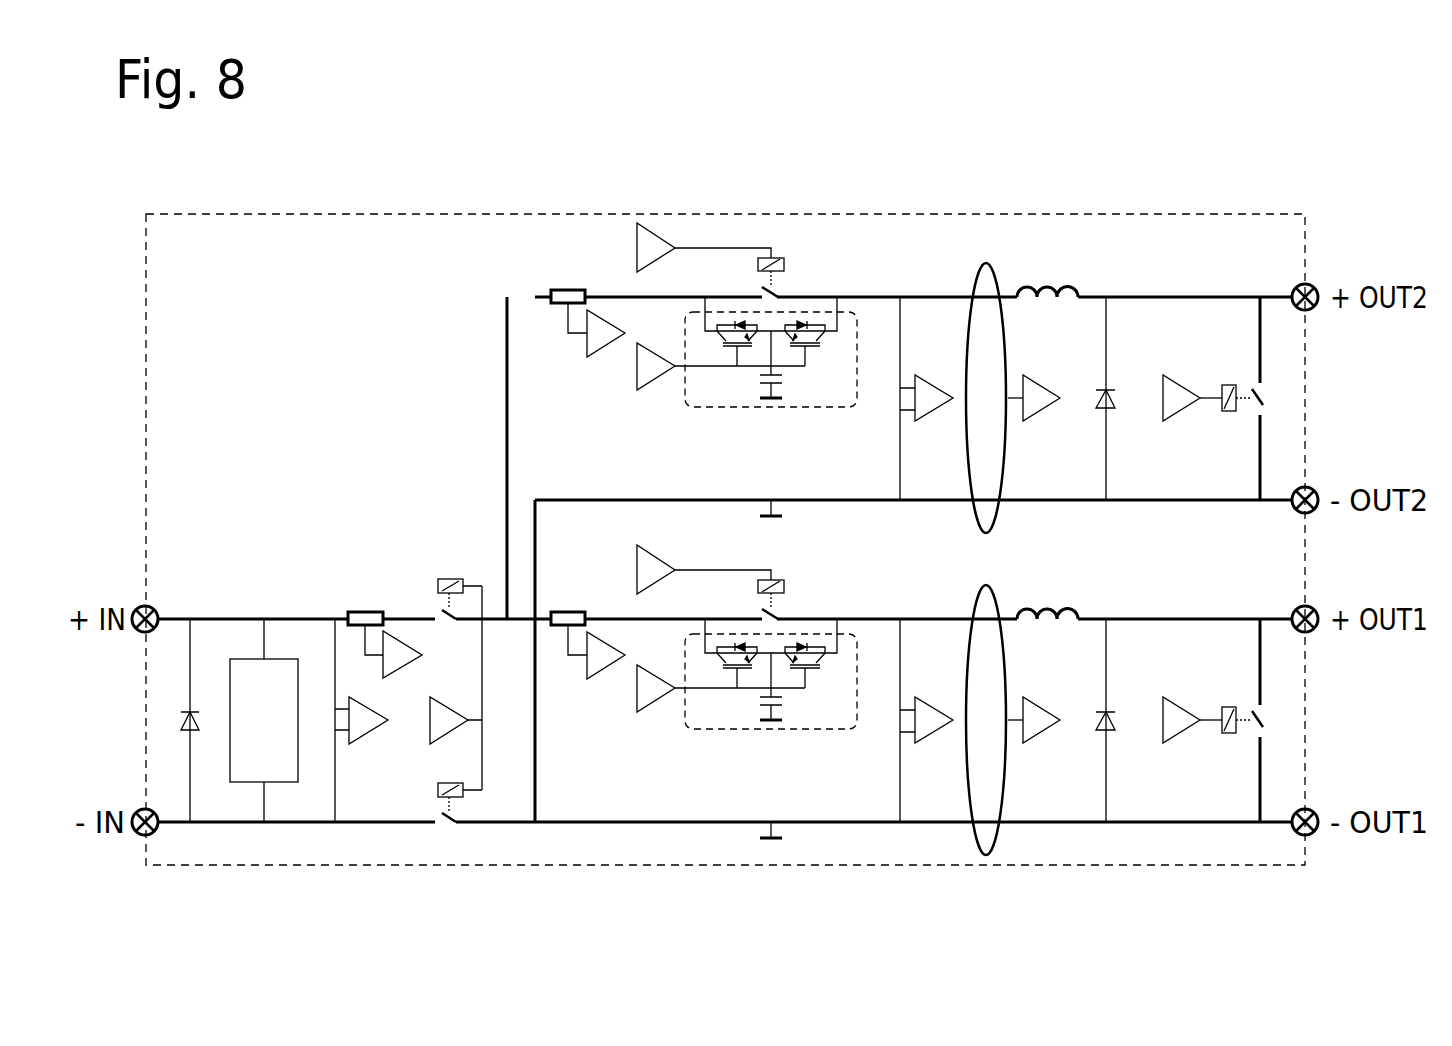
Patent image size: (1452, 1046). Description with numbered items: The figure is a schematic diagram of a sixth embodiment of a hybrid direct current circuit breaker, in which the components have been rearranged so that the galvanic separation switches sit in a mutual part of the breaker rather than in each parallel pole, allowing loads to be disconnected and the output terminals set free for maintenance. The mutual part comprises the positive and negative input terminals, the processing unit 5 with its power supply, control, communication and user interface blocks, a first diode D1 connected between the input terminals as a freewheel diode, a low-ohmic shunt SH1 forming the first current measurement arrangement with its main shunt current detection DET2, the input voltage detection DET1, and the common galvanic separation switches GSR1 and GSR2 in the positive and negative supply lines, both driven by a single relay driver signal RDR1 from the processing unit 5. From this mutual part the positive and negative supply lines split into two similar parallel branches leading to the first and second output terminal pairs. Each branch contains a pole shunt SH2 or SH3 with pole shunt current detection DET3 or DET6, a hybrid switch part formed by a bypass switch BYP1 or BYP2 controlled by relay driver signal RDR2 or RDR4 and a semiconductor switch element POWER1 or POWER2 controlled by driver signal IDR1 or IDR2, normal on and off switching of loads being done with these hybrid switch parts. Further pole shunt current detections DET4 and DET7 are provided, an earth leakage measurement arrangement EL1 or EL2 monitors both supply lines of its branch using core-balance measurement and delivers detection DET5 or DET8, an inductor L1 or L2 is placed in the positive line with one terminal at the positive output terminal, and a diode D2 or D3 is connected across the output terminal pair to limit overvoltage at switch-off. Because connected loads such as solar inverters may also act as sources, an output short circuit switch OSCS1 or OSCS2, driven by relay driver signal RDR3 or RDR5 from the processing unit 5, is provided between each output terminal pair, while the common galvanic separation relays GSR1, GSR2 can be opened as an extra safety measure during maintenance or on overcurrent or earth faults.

The processing unit 5 is at (286, 678).
The first diode D1 is at (179, 720).
The second diode D2 is at (1119, 720).
The diode D3 is at (1119, 398).
The low-ohmic shunt SH1 is at (368, 607).
The pole shunt SH2 is at (569, 607).
The pole shunt SH3 is at (569, 285).
The inductor L1 is at (1047, 602).
The inductor L2 is at (1047, 280).
The earth leakage measurement arrangement EL1 is at (986, 709).
The earth leakage measurement arrangement EL2 is at (986, 387).
The input voltage detection DET1 is at (361, 720).
The main shunt current detection DET2 is at (393, 651).
The pole shunt current detection DET3 is at (596, 652).
The output voltage detection DET4 is at (926, 720).
The earth-leakage detection DET5 is at (1034, 720).
The pole shunt current detection DET6 is at (596, 330).
The pole shunt current detection DET7 is at (926, 398).
The pole shunt current detection DET8 is at (1034, 398).
The relay driver signal RDR1 is at (456, 688).
The relay driver signal RDR2 is at (704, 569).
The relay driver signal RDR3 is at (1192, 720).
The relay driver signal RDR4 is at (704, 247).
The relay driver signal RDR5 is at (1192, 398).
The driver signal IDR1 is at (721, 688).
The driver signal IDR2 is at (721, 366).
The bypass switch BYP1 is at (785, 599).
The bypass switch BYP2 is at (785, 277).
The first galvanic separation switch GSR1 is at (445, 599).
The second galvanic separation switch GSR2 is at (445, 802).
The output short circuit switch OSCS1 is at (1237, 720).
The output short circuit switch OSCS2 is at (1237, 398).
The semiconductor switch element POWER1 is at (771, 674).
The semiconductor switch element POWER2 is at (771, 352).